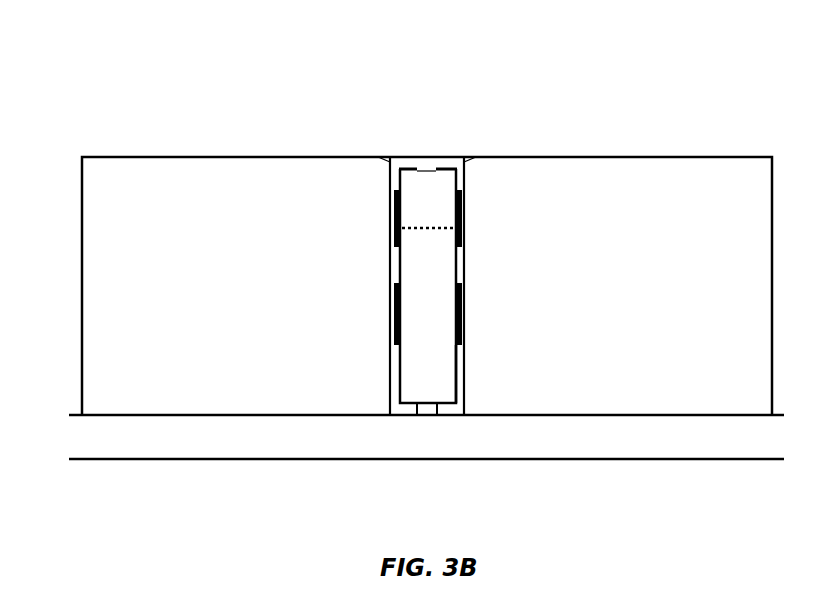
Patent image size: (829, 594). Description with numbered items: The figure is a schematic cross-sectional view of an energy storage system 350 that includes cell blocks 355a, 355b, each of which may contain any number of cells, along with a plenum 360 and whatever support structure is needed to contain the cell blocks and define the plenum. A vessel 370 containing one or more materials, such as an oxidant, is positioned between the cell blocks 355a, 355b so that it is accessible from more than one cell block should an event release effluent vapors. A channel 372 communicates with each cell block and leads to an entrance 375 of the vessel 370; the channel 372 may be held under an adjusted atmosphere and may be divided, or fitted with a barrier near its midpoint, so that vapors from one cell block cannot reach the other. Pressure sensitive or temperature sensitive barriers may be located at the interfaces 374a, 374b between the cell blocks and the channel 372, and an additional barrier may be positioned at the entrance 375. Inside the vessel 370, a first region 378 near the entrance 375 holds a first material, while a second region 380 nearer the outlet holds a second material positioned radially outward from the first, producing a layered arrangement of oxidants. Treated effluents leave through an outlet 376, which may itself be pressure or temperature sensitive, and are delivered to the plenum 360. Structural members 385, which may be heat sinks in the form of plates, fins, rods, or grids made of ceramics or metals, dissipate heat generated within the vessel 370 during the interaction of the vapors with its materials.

The energy storage system 350 is at (66, 88).
The cell block 355a is at (217, 157).
The cell block 355b is at (680, 157).
The channel 372 is at (407, 157).
The interface 374a is at (390, 162).
The interface 374b is at (477, 157).
The entrance 375 is at (400, 192).
The first region 378 is at (458, 180).
The second region 380 is at (458, 270).
The structural members 385 is at (395, 303).
The vessel 370 is at (458, 350).
The outlet 376 is at (428, 415).
The plenum 360 is at (663, 460).